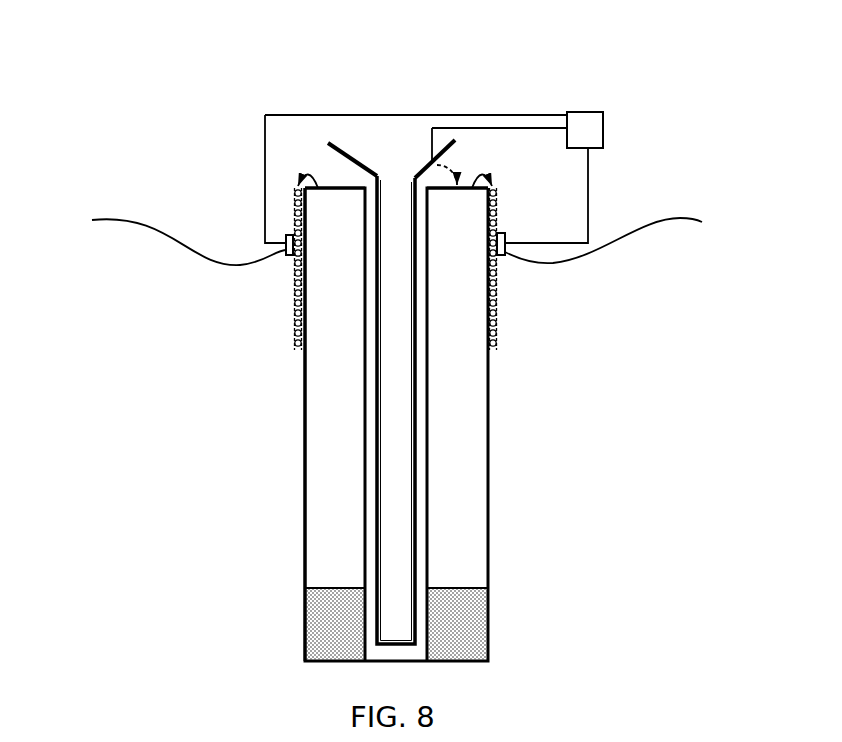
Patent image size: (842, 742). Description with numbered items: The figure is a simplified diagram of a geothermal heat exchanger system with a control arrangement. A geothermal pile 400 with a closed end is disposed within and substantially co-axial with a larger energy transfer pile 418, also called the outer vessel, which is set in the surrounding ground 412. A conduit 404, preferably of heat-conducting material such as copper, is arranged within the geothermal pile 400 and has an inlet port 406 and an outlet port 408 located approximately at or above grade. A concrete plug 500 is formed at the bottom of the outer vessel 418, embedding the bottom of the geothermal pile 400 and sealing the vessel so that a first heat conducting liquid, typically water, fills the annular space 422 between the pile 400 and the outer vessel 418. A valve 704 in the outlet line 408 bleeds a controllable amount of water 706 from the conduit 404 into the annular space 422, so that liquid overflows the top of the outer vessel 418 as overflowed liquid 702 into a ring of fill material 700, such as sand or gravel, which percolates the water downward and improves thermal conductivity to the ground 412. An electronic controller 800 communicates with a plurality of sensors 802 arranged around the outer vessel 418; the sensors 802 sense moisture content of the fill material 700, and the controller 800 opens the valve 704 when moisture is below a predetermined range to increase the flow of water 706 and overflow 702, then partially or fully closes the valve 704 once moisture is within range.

The geothermal pile 400 is at (429, 549).
The conduit 404 is at (420, 423).
The inlet port 406 is at (340, 157).
The outlet port 408 is at (446, 146).
The surrounding ground 412 is at (582, 468).
The energy transfer pile 418 is at (303, 500).
The annular space 422 is at (328, 458).
The concrete plug 500 is at (459, 625).
The fill material 700 is at (503, 310).
The overflowed liquid 702 is at (484, 172).
The valve 704 is at (430, 161).
The water 706 is at (453, 156).
The electronic controller 800 is at (607, 132).
The sensors 802 is at (397, 236).